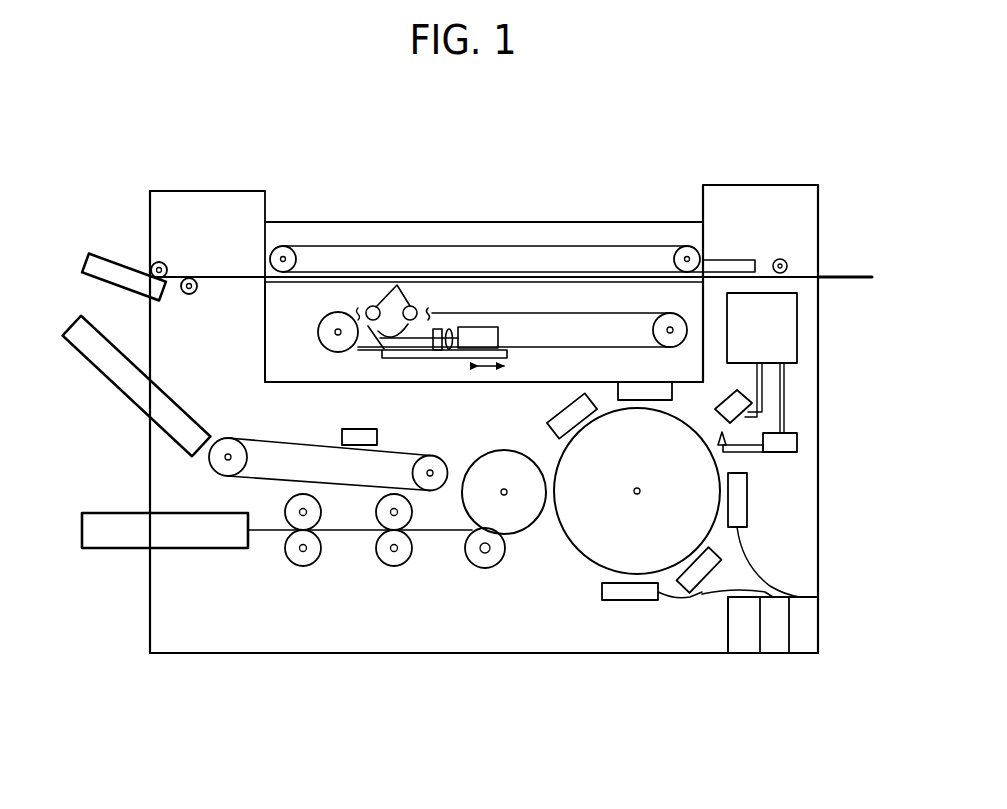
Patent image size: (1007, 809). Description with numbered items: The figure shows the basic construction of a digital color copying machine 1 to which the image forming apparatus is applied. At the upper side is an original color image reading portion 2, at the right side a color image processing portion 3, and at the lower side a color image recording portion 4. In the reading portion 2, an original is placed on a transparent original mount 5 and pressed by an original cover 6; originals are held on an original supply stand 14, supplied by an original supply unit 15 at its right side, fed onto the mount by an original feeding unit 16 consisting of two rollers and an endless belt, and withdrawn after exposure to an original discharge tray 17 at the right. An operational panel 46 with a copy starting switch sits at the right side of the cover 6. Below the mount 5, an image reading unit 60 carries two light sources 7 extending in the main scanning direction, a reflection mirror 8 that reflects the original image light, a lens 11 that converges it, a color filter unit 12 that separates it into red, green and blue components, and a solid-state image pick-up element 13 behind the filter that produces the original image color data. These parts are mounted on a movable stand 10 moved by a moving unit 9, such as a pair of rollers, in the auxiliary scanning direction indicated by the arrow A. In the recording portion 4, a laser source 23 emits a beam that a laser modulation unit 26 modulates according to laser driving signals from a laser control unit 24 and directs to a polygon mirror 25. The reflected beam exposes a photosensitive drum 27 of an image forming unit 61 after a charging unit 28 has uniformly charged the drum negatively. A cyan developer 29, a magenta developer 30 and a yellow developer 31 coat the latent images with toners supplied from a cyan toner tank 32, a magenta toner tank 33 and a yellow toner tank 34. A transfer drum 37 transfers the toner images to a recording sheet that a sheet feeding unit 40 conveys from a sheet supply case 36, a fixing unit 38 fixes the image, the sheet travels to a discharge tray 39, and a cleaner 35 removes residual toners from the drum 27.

The digital color copying machine 1 is at (494, 204).
The original color image reading portion 2 is at (133, 232).
The color image processing portion 3 is at (786, 290).
The color image recording portion 4 is at (443, 667).
The transparent original mount 5 is at (283, 287).
The original cover 6 is at (360, 233).
The light sources 7 is at (393, 291).
The reflection mirror 8 is at (352, 347).
The moving unit 9 is at (664, 331).
The movable stand 10 is at (407, 357).
The lens 11 is at (437, 353).
The color filter unit 12 is at (450, 352).
The solid-state image pick-up element 13 is at (493, 338).
The original supply stand 14 is at (93, 262).
The original supply unit 15 is at (163, 264).
The original feeding unit 16 is at (287, 248).
The original discharge tray 17 is at (845, 275).
The laser source 23 is at (718, 438).
The laser control unit 24 is at (787, 443).
The polygon mirror 25 is at (736, 403).
The laser modulation unit 26 is at (751, 454).
The photosensitive drum 27 is at (598, 550).
The charging unit 28 is at (640, 392).
The cyan developer 29 is at (740, 507).
The magenta developer 30 is at (691, 576).
The yellow developer 31 is at (634, 601).
The cyan toner tank 32 is at (802, 621).
The magenta toner tank 33 is at (776, 638).
The yellow toner tank 34 is at (745, 638).
The cleaner 35 is at (552, 427).
The sheet supply case 36 is at (126, 537).
The transfer drum 37 is at (522, 517).
The fixing unit 38 is at (355, 437).
The discharge tray 39 is at (100, 350).
The sheet feeding unit 40 is at (226, 445).
The operational panel 46 is at (730, 263).
The image reading unit 60 is at (607, 300).
The image forming unit 61 is at (582, 632).
The arrow indicating auxiliary scanning direction A is at (509, 366).